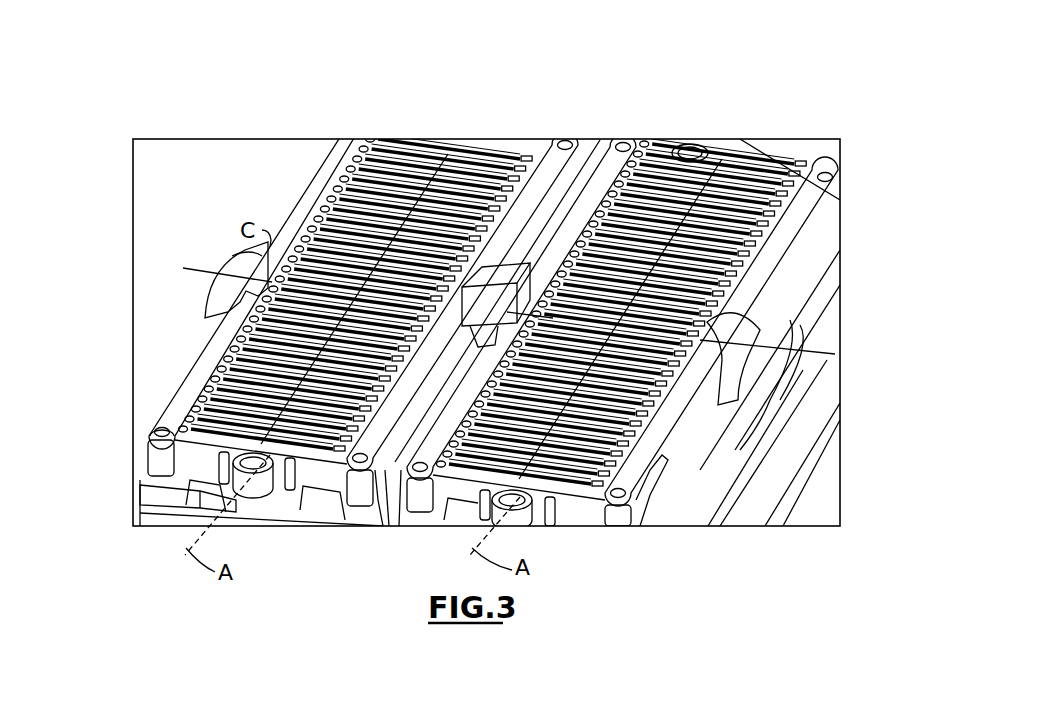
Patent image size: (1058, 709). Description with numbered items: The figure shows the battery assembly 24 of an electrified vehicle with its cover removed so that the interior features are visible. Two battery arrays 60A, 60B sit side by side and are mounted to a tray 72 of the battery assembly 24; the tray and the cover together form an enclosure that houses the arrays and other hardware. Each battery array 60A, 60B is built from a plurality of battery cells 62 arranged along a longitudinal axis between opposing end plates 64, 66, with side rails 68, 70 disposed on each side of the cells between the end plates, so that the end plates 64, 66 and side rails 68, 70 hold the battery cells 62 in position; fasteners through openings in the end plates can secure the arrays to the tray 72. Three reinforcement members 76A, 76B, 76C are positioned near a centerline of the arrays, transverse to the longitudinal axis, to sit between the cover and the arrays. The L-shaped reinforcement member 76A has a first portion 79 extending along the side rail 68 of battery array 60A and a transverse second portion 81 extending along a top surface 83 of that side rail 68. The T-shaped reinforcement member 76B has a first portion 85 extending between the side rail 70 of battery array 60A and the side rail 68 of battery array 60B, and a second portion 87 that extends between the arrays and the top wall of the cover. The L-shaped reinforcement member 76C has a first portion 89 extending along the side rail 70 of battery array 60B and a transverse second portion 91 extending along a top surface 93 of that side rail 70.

The battery assembly 24 is at (550, 90).
The battery array 60A is at (447, 128).
The battery array 60B is at (702, 148).
The battery cells 62 is at (458, 136).
The end plate 64 is at (322, 505).
The end plate 66 is at (535, 150).
The side rail 68 is at (140, 495).
The side rail 70 is at (582, 148).
The tray 72 is at (818, 162).
The reinforcement member 76A is at (215, 272).
The reinforcement member 76B is at (508, 315).
The reinforcement member 76C is at (762, 334).
The first portion 79 is at (208, 304).
The second portion 81 is at (242, 252).
The top surface 83 is at (165, 420).
The first portion 85 is at (388, 525).
The second portion 87 is at (468, 285).
The first portion 89 is at (738, 365).
The second portion 91 is at (782, 232).
The top surface 93 is at (638, 520).